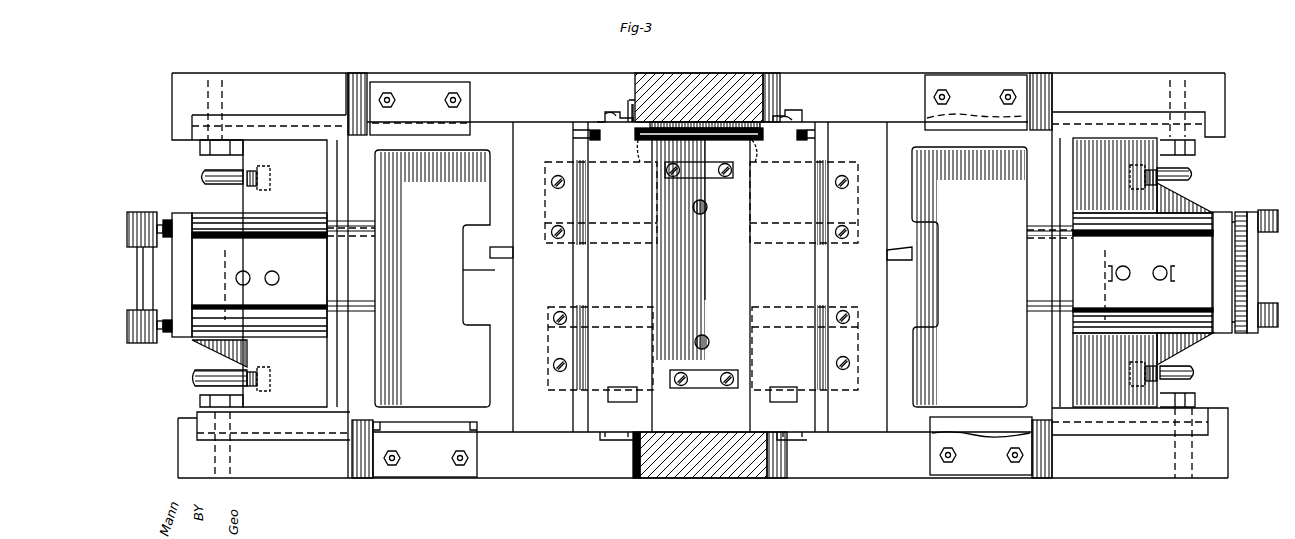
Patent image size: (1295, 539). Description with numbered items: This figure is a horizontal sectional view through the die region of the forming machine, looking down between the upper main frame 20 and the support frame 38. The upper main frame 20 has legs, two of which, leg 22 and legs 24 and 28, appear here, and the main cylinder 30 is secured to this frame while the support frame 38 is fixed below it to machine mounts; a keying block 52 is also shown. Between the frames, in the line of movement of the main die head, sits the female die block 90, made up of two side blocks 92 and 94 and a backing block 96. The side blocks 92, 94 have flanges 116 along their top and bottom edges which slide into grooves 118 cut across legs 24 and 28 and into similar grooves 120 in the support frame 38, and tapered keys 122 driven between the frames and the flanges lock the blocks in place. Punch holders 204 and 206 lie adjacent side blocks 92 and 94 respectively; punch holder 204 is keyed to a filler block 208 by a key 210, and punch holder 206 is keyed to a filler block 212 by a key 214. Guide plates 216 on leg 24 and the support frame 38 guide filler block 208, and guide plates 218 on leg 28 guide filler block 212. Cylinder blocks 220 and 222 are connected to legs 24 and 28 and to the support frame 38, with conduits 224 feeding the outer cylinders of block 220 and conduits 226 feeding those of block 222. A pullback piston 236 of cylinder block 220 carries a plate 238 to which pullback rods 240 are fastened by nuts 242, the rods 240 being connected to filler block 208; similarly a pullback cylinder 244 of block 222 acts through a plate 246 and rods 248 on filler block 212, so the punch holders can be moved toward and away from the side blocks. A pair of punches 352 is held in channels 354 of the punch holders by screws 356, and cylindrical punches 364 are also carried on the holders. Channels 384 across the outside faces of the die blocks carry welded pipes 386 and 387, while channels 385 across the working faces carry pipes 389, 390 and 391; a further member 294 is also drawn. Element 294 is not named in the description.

The upper main frame 20 is at (901, 72).
The leg 22 is at (698, 73).
The leg 24 is at (1090, 80).
The leg 28 is at (294, 82).
The main cylinder 30 is at (275, 240).
The support frame 38 is at (855, 472).
The keying block 52 is at (495, 266).
The female die block 90 is at (628, 421).
The side block 92 is at (760, 293).
The side block 94 is at (660, 360).
The backing block 96 is at (748, 352).
The flange 116 is at (603, 112).
The groove 118 is at (614, 114).
The groove 120 is at (620, 434).
The tapered key 122 is at (728, 84).
The punch holder 204 is at (884, 135).
The punch holder 206 is at (524, 132).
The filler block 208 is at (906, 195).
The key 210 is at (888, 255).
The filler block 212 is at (490, 210).
The key 214 is at (500, 248).
The guide plate 216 is at (988, 78).
The guide plate 218 is at (412, 84).
The cylinder block 220 is at (1090, 145).
The cylinder block 222 is at (250, 205).
The conduit 224 is at (1190, 173).
The conduit 226 is at (200, 178).
The pullback piston 236 is at (1245, 258).
The plate 238 is at (1250, 286).
The pullback rod 240 is at (1232, 212).
The nut 242 is at (1268, 210).
The pullback cylinder 244 is at (160, 285).
The plate 246 is at (155, 343).
The rod 248 is at (164, 220).
The guide rod 294 is at (573, 156).
The punch 352 is at (556, 168).
The channel 354 is at (548, 198).
The screw 356 is at (558, 232).
The cylindrical punch 364 is at (594, 243).
The channel 384 is at (596, 140).
The channel 385 is at (636, 133).
The pipe 386 is at (573, 128).
The pipe 387 is at (812, 128).
The pipe 389 is at (640, 162).
The pipe 390 is at (755, 162).
The pipe 391 is at (705, 128).